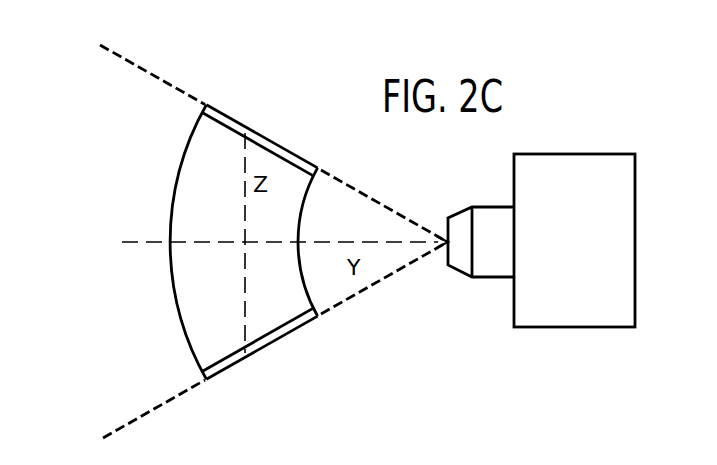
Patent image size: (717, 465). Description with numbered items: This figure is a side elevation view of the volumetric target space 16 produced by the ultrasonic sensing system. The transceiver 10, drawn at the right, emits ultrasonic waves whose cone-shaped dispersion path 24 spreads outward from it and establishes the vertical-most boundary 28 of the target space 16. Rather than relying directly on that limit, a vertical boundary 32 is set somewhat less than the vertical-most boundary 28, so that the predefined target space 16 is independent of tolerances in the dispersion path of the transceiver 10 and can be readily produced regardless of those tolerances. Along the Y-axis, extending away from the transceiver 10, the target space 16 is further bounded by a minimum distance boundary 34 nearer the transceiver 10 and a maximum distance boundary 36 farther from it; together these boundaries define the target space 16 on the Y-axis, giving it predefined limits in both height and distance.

The transceiver 10 is at (506, 251).
The volumetric target space 16 is at (244, 220).
The cone-shaped dispersion path 24 is at (342, 179).
The vertical-most boundary 28 is at (254, 126).
The vertical boundary 32 is at (276, 156).
The minimum distance boundary 34 is at (300, 260).
The maximum distance boundary 36 is at (172, 270).